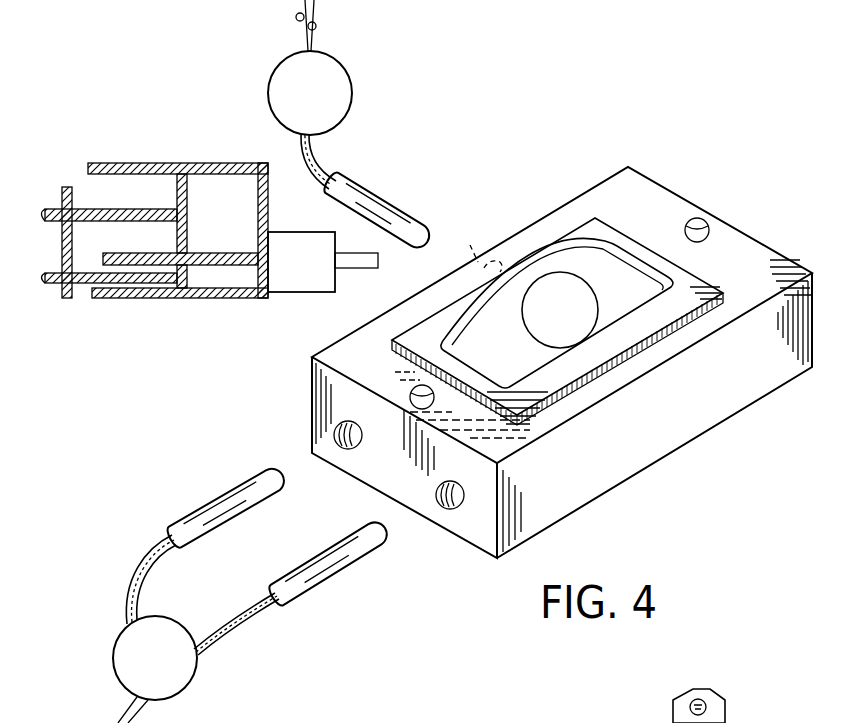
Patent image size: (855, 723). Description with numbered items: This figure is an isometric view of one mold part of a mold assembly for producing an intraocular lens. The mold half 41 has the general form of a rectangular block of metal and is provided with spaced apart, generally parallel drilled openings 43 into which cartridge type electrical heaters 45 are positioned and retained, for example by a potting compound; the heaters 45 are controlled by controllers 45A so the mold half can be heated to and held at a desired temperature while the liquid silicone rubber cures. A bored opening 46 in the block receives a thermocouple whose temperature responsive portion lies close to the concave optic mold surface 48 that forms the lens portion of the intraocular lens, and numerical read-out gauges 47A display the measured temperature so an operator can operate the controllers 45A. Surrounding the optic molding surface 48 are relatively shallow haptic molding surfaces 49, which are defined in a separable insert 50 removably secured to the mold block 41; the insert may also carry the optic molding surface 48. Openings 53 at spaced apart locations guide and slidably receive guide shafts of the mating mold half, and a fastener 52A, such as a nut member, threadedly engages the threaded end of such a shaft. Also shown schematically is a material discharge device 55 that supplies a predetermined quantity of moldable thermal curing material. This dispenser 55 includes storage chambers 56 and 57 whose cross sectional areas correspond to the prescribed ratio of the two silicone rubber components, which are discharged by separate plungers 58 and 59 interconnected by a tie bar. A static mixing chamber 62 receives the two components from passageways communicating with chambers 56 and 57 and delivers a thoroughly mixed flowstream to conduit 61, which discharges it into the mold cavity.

The mold half 41 is at (738, 399).
The drilled openings 43 is at (353, 452).
The cartridge type electrical heaters 45 is at (232, 520).
The controllers 45A is at (183, 694).
The bored opening 46 is at (456, 315).
The numerical read-out gauges 47A is at (343, 68).
The concave optic mold surfaces 48 is at (546, 286).
The haptic molding surfaces 49 is at (618, 258).
The separable insert 50 is at (703, 277).
The fastener 52A is at (726, 708).
The openings 53 is at (697, 218).
The material discharge device 55 is at (148, 162).
The storage chamber 56 is at (240, 226).
The storage chamber 57 is at (243, 287).
The plunger 58 is at (190, 190).
The plunger 59 is at (183, 282).
The conduit 61 is at (354, 269).
The static mixing chamber 62 is at (316, 271).